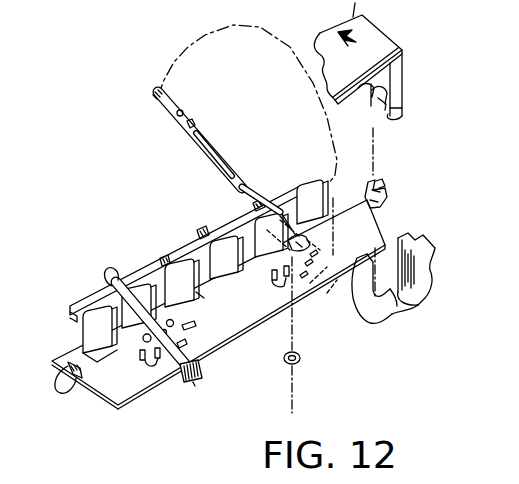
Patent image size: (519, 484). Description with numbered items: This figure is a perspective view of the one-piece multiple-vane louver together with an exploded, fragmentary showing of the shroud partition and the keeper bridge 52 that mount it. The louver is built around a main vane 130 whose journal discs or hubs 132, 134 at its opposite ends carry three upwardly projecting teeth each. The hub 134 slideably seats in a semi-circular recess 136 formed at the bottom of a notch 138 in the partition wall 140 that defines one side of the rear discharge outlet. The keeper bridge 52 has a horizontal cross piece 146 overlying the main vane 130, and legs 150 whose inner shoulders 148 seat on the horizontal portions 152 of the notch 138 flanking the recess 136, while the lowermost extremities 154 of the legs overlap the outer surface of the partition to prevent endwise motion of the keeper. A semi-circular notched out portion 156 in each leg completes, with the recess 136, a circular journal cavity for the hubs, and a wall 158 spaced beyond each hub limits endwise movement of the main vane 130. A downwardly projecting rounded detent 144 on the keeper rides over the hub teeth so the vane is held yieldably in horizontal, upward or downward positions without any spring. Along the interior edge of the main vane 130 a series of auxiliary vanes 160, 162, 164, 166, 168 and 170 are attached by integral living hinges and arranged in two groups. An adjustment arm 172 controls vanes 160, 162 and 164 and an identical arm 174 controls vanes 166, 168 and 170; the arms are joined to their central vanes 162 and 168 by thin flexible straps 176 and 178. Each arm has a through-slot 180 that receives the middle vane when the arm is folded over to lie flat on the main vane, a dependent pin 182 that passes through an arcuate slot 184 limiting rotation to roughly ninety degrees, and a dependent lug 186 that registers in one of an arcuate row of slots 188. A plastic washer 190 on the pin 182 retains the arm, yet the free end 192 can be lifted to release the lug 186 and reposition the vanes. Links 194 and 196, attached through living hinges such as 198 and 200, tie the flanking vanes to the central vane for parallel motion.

The keeper bridge 52 is at (392, 33).
The main vane 130 is at (140, 402).
The journal disc 132 is at (64, 390).
The journal disc 134 is at (387, 203).
The semi-circular recess 136 is at (368, 318).
The notch 138 is at (389, 237).
The partition wall 140 is at (429, 272).
The rounded detent 144 is at (366, 95).
The horizontal cross piece 146 is at (357, 8).
The shoulders 148 is at (396, 120).
The legs 150 is at (403, 76).
The horizontal portions 152 is at (394, 305).
The lowermost extremities 154 is at (403, 112).
The semi-circular notched out portion 156 is at (383, 112).
The wall 158 is at (377, 101).
The auxiliary vane 160 is at (83, 338).
The auxiliary vane 162 is at (166, 256).
The auxiliary vane 164 is at (188, 258).
The auxiliary vane 166 is at (201, 231).
The auxiliary vane 168 is at (260, 202).
The auxiliary vane 170 is at (303, 186).
The adjustment arm 172 is at (195, 383).
The adjustment arm 174 is at (158, 99).
The flexible strap portion 176 is at (109, 276).
The flexible strap portion 178 is at (240, 195).
The through-slot 180 is at (212, 166).
The projecting pin 182 is at (194, 123).
The arcuate slot 184 is at (315, 240).
The dependent lug 186 is at (182, 112).
The slots 188 is at (144, 362).
The plastic washer 190 is at (300, 360).
The free end 192 is at (203, 373).
The link 194 is at (88, 308).
The link 196 is at (137, 282).
The living hinge portion 198 is at (77, 321).
The living hinge portion 200 is at (133, 336).